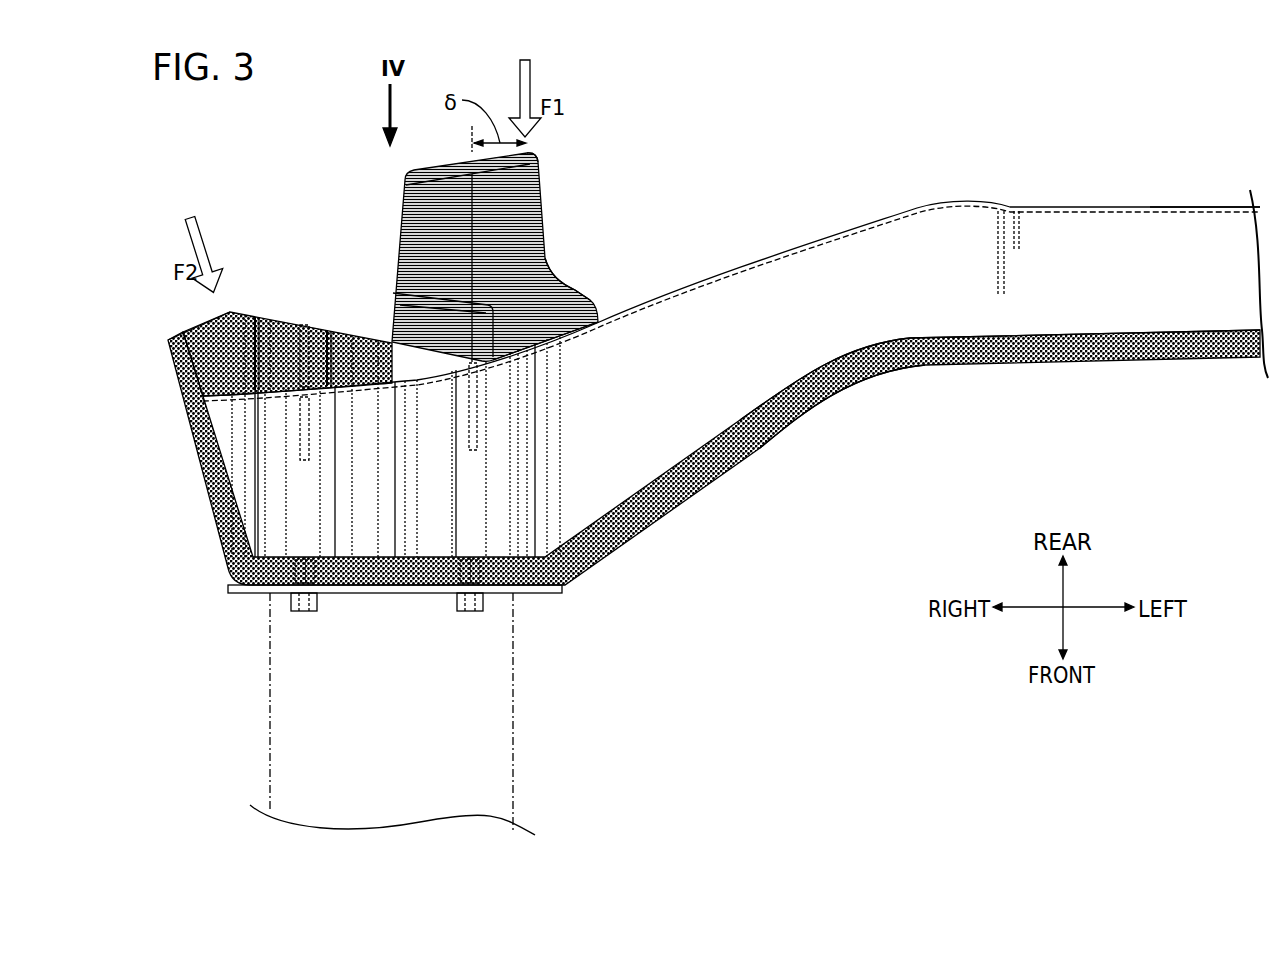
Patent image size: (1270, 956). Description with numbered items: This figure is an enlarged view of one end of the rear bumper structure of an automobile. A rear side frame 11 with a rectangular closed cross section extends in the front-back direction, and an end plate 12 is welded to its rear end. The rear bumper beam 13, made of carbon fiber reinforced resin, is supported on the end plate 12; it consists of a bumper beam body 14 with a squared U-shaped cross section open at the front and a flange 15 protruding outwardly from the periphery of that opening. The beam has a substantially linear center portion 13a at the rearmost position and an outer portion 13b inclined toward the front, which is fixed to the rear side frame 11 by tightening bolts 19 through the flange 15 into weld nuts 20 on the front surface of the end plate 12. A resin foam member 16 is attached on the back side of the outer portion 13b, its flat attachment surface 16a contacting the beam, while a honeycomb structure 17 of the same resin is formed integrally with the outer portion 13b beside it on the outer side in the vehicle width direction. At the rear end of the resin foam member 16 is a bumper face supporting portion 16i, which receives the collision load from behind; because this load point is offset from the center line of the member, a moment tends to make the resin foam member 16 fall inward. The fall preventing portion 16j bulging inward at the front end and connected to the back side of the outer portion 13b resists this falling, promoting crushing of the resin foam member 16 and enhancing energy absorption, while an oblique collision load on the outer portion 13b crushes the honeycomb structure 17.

The rear side frame 11 is at (513, 755).
The end plate 12 is at (540, 595).
The rear bumper beam 13 is at (1115, 131).
The center portion 13a is at (1207, 232).
The outer portion 13b is at (273, 482).
The bumper beam body 14 is at (912, 207).
The flange 15 is at (1172, 322).
The resin foam member 16 is at (483, 250).
The attachment surface 16a is at (550, 347).
The bumper face supporting portion 16i is at (537, 155).
The fall preventing portion 16j is at (582, 288).
The honeycomb structure 17 is at (313, 325).
The bolt 19 is at (472, 558).
The weld nut 20 is at (470, 598).